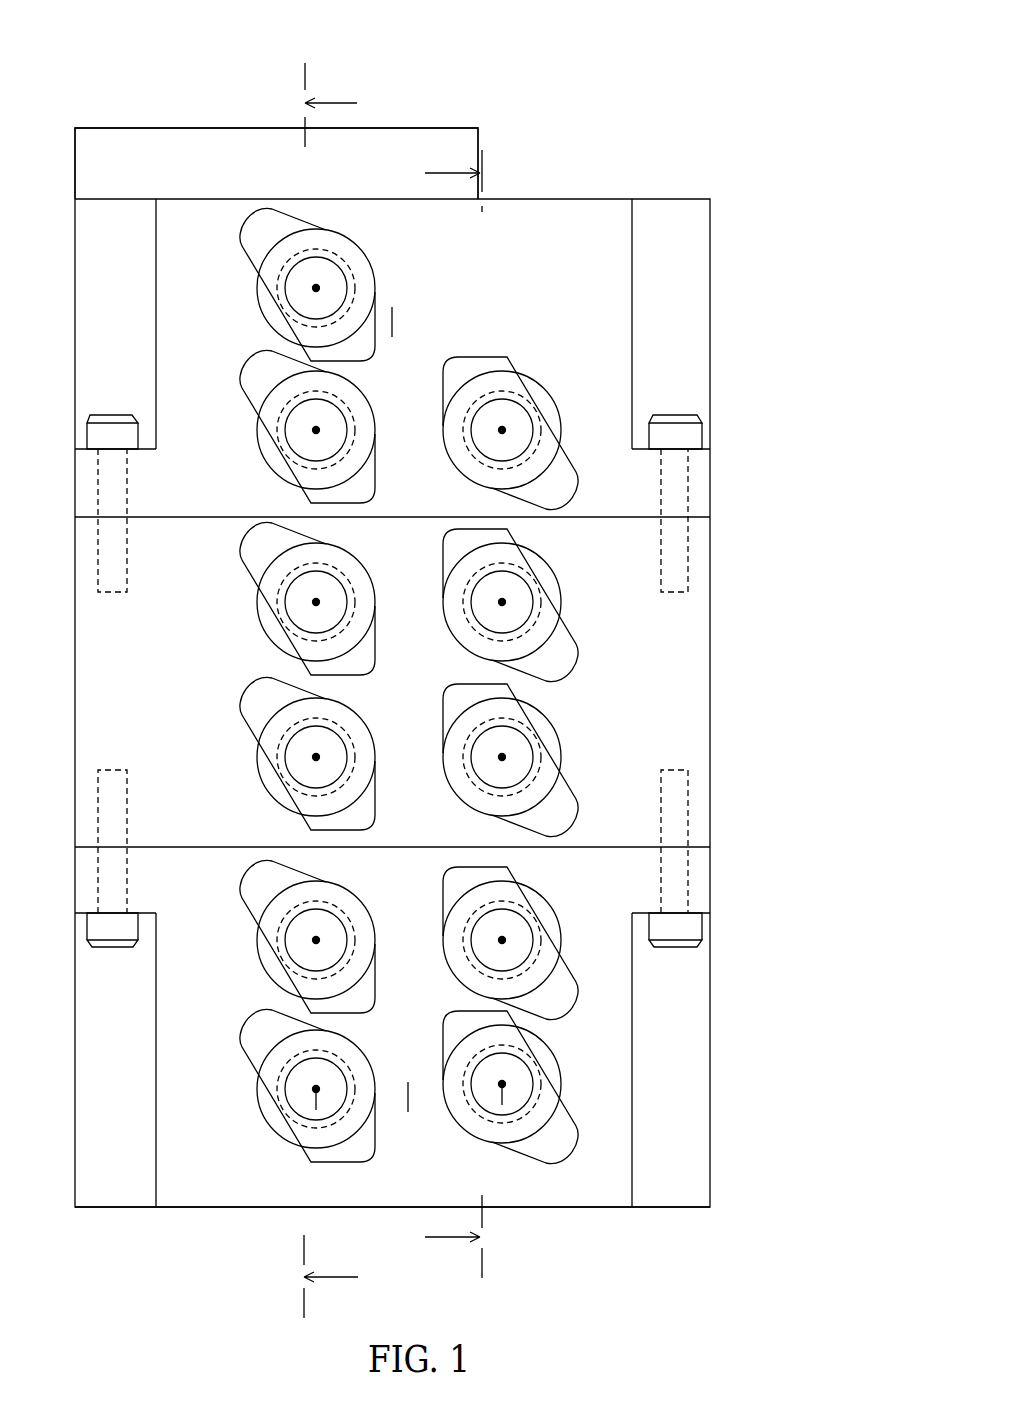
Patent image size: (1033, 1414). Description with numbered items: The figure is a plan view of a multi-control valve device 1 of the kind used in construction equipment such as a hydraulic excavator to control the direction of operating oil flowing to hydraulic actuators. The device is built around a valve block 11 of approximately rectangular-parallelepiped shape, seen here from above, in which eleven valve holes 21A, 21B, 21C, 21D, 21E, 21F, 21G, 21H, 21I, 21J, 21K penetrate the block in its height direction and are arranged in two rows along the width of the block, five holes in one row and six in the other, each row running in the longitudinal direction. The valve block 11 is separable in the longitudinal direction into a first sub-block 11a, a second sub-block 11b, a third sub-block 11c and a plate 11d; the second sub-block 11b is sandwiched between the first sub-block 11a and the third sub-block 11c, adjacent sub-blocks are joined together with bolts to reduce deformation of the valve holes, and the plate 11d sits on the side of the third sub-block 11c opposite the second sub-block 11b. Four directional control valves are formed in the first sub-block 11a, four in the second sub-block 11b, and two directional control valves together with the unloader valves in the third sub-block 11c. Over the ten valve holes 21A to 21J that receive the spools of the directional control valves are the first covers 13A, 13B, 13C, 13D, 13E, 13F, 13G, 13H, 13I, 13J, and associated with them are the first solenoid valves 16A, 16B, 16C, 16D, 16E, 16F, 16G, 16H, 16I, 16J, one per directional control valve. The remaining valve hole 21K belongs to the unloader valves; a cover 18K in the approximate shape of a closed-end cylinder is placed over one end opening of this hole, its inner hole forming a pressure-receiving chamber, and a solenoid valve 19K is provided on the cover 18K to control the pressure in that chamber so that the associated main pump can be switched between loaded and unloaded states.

The multi-control valve device 1 is at (694, 143).
The valve block 11 is at (603, 107).
The first sub-block 11a is at (692, 878).
The second sub-block 11b is at (693, 695).
The third sub-block 11c is at (692, 495).
The plate 11d is at (162, 140).
The first cover 13A is at (545, 1111).
The first cover 13B is at (545, 967).
The first cover 13C is at (545, 784).
The first cover 13D is at (545, 629).
The first cover 13E is at (545, 457).
The first cover 13F is at (270, 1115).
The first cover 13G is at (270, 966).
The first cover 13H is at (270, 783).
The first cover 13I is at (270, 628).
The first cover 13J is at (270, 456).
The first solenoid valve 16A is at (527, 1087).
The first solenoid valve 16B is at (527, 943).
The first solenoid valve 16C is at (527, 760).
The first solenoid valve 16D is at (527, 605).
The first solenoid valve 16E is at (527, 433).
The first solenoid valve 16F is at (290, 1093).
The first solenoid valve 16G is at (290, 944).
The first solenoid valve 16H is at (290, 761).
The first solenoid valve 16I is at (290, 606).
The first solenoid valve 16J is at (290, 434).
The cover 18K is at (270, 314).
The solenoid valve 19K is at (290, 292).
The valve hole 21A is at (533, 1072).
The valve hole 21B is at (533, 928).
The valve hole 21C is at (533, 745).
The valve hole 21D is at (533, 590).
The valve hole 21E is at (533, 418).
The valve hole 21F is at (281, 1078).
The valve hole 21G is at (281, 929).
The valve hole 21H is at (281, 746).
The valve hole 21I is at (281, 591).
The valve hole 21J is at (281, 419).
The valve hole 21K is at (281, 277).